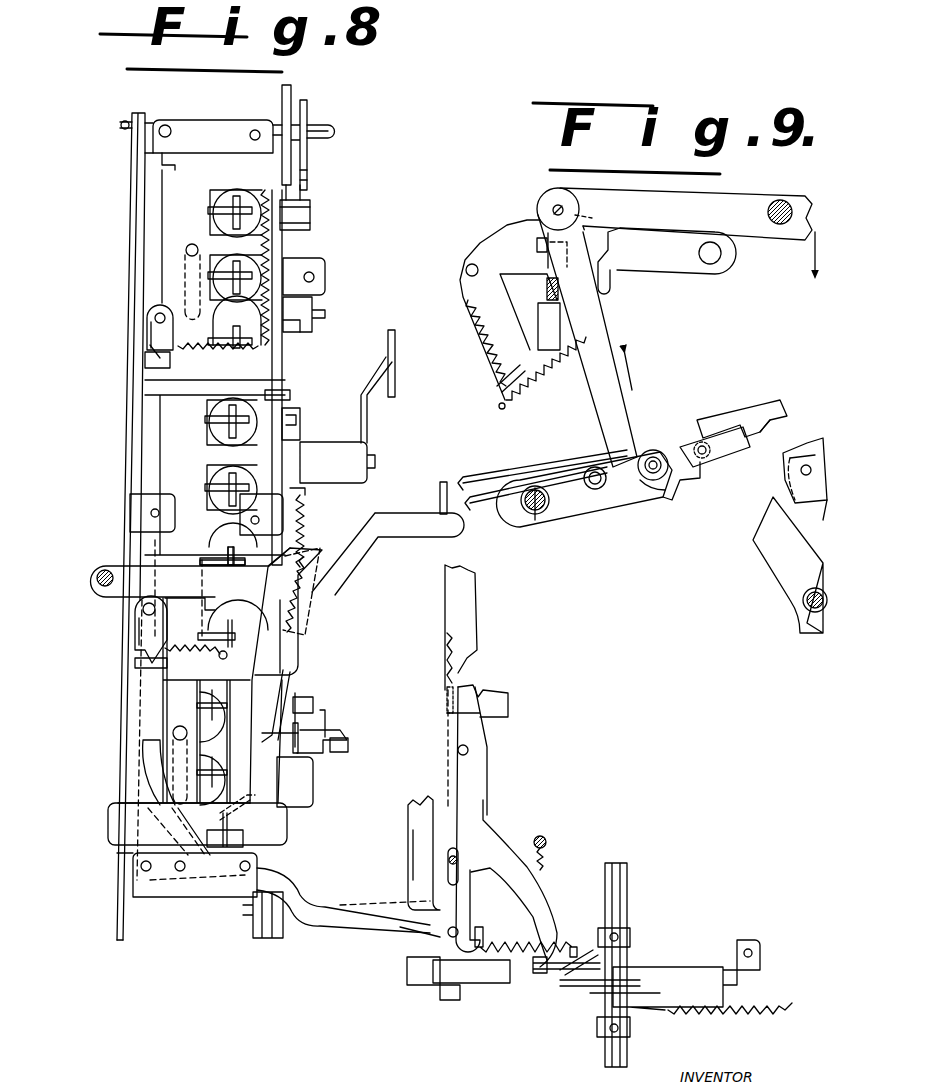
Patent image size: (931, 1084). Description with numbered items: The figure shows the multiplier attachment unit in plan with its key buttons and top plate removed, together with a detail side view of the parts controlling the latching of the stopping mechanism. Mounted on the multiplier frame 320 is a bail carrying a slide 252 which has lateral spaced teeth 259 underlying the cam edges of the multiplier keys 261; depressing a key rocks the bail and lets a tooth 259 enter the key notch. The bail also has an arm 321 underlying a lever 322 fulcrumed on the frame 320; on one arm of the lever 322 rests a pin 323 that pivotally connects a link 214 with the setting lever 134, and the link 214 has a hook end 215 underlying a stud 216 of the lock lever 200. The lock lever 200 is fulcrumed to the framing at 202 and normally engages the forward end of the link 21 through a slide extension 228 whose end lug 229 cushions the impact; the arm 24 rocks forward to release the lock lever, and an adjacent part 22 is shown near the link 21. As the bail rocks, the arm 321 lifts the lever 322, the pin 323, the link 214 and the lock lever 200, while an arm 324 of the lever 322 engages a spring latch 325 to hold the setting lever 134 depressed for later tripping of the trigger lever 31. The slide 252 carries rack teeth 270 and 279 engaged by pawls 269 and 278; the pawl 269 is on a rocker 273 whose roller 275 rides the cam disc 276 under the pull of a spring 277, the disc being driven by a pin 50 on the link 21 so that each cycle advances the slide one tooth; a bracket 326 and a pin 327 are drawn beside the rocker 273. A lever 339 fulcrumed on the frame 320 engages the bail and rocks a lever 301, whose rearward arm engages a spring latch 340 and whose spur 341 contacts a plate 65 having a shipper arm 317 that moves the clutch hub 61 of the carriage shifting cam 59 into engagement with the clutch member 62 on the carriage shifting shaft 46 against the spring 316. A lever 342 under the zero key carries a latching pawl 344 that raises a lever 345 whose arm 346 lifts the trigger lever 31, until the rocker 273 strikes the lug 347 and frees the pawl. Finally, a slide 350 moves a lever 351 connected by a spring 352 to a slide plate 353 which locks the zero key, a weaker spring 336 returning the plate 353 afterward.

In FIG. 9, the link 21 is at (795, 462).
In FIG. 9, the pawl tooth 22 is at (808, 505).
In FIG. 9, the arm 24 is at (782, 577).
In FIG. 8, the trigger lever 31 is at (395, 385).
In FIG. 8, the carriage shifting shaft 46 is at (627, 1050).
In FIG. 8, the pin 50 is at (330, 126).
In FIG. 8, the carriage shifting cam 59 is at (590, 985).
In FIG. 8, the clutch hub 61 is at (607, 998).
In FIG. 8, the clutch member 62 is at (600, 1032).
In FIG. 8, the plate 65 is at (553, 973).
In FIG. 9, the setting lever 134 is at (750, 224).
In FIG. 9, the lock lever 200 is at (728, 448).
In FIG. 9, the fulcrum 202 is at (537, 515).
In FIG. 9, the link 214 is at (602, 343).
In FIG. 9, the hook end 215 is at (655, 482).
In FIG. 9, the stud 216 is at (655, 452).
In FIG. 9, the slide extension 228 is at (712, 420).
In FIG. 9, the end lug 229 is at (762, 428).
In FIG. 8, the slide 252 is at (170, 238).
In FIG. 8, the teeth 259 is at (172, 471).
In FIG. 8, the multiplier keys 261 is at (220, 210).
In FIG. 8, the pawl 269 is at (150, 362).
In FIG. 8, the rack teeth 270 is at (152, 338).
In FIG. 8, the rocker 273 is at (268, 375).
In FIG. 8, the roller 275 is at (297, 213).
In FIG. 8, the cam disc 276 is at (307, 150).
In FIG. 8, the spring 277 is at (263, 237).
In FIG. 8, the pawl 278 is at (140, 665).
In FIG. 8, the rack teeth 279 is at (132, 628).
In FIG. 8, the lever 301 is at (475, 790).
In FIG. 8, the spring 316 is at (546, 850).
In FIG. 8, the shipper arm 317 is at (695, 1007).
In FIG. 8, the multiplier frame 320 is at (291, 96).
In FIG. 8, the arm 321 is at (298, 735).
In FIG. 9, the arm 321 is at (547, 290).
In FIG. 8, the lever 322 is at (340, 733).
In FIG. 9, the lever 322 is at (493, 252).
In FIG. 8, the pin 323 is at (340, 745).
In FIG. 9, the pin 323 is at (545, 203).
In FIG. 9, the arm 324 is at (484, 334).
In FIG. 9, the spring latch 325 is at (505, 396).
In FIG. 8, the bracket 326 is at (298, 312).
In FIG. 8, the pin 327 is at (297, 327).
In FIG. 8, the spring 336 is at (305, 509).
In FIG. 8, the lever 339 is at (295, 886).
In FIG. 8, the spring latch 340 is at (493, 708).
In FIG. 8, the spur 341 is at (540, 888).
In FIG. 8, the lever 342 is at (290, 683).
In FIG. 8, the latching pawl 344 is at (300, 421).
In FIG. 8, the lever 345 is at (340, 460).
In FIG. 8, the arm 346 is at (367, 415).
In FIG. 8, the lug 347 is at (290, 396).
In FIG. 8, the slide 350 is at (440, 495).
In FIG. 8, the lever 351 is at (398, 537).
In FIG. 8, the spring 352 is at (303, 597).
In FIG. 8, the slide plate 353 is at (295, 652).